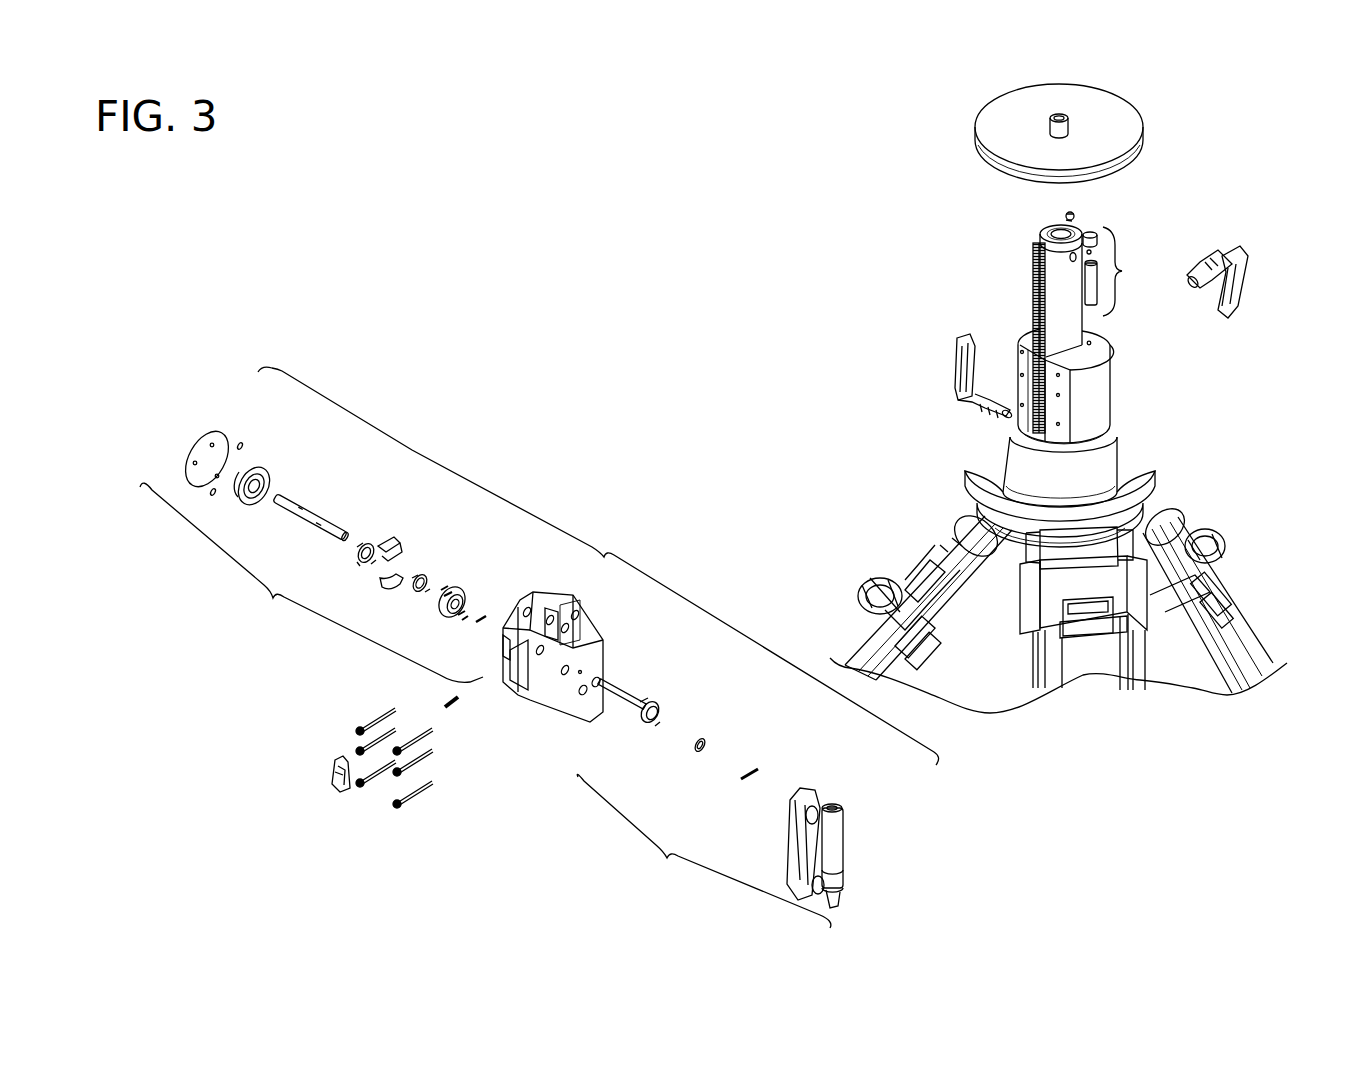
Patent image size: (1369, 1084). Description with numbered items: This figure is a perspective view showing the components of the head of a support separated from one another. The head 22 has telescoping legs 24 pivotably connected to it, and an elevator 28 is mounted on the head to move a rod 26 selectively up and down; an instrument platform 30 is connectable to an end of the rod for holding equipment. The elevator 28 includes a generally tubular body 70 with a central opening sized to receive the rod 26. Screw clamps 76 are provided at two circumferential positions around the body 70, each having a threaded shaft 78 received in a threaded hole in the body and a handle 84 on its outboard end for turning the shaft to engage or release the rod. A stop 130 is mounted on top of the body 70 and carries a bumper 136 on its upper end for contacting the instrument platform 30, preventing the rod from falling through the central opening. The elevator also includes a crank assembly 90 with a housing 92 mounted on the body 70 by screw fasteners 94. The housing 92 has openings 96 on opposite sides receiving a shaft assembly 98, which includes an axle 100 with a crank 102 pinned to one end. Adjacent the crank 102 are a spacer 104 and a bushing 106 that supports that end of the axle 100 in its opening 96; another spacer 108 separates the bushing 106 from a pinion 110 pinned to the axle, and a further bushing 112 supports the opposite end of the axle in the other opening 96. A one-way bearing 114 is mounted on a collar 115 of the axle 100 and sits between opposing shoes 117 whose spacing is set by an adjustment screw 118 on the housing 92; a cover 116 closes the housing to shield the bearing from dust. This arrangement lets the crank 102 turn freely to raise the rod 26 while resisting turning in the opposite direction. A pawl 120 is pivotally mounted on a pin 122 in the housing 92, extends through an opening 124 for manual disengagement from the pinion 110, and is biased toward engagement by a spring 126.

The instrument platform 30 is at (1155, 122).
The bumper 136 is at (1062, 214).
The rod 26 is at (1030, 280).
The stop 130 is at (1126, 271).
The threaded shaft 78 is at (1196, 268).
The screw clamp 76 is at (1090, 309).
The handle 84 is at (1240, 292).
The elevator 28 is at (1125, 382).
The tubular body 70 is at (1005, 448).
The head 22 is at (1162, 460).
The telescoping legs 24 is at (1258, 620).
The crank assembly 90 is at (598, 566).
The shaft assembly 98 is at (485, 705).
The cover 116 is at (190, 456).
The one-way bearing 114 is at (267, 468).
The axle 100 is at (318, 512).
The collar 115 is at (363, 540).
The shoes 117 is at (404, 580).
The bushing 112 is at (417, 592).
The pinion 110 is at (460, 582).
The spacer 108 is at (498, 628).
The adjustment screw 118 is at (557, 612).
The opening 124 is at (578, 614).
The openings 96 is at (600, 676).
The housing 92 is at (577, 670).
The pin 122 is at (638, 700).
The bushing 106 is at (648, 724).
The spring 126 is at (455, 703).
The spacer 104 is at (697, 752).
The crank 102 is at (838, 853).
The pawl 120 is at (336, 770).
The screw fasteners 94 is at (372, 782).